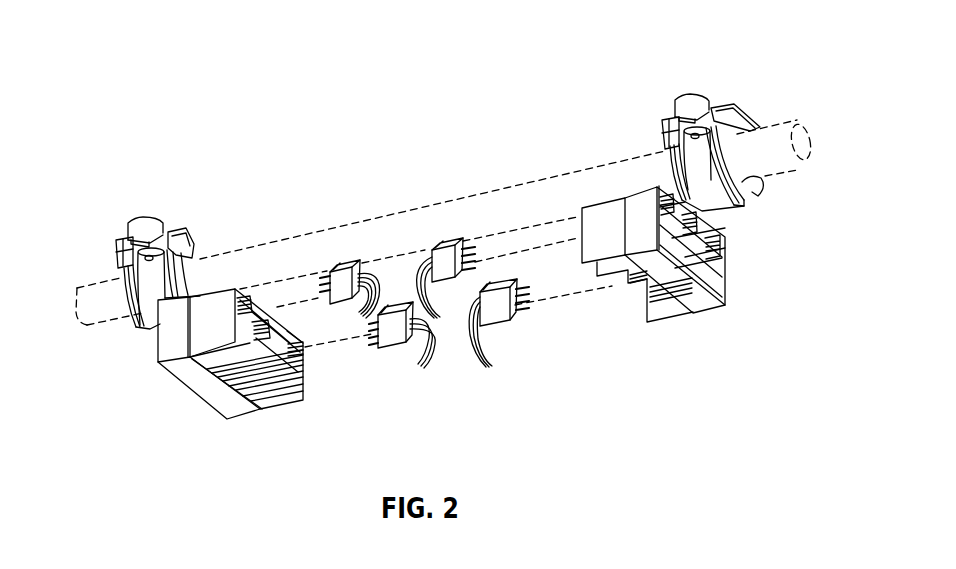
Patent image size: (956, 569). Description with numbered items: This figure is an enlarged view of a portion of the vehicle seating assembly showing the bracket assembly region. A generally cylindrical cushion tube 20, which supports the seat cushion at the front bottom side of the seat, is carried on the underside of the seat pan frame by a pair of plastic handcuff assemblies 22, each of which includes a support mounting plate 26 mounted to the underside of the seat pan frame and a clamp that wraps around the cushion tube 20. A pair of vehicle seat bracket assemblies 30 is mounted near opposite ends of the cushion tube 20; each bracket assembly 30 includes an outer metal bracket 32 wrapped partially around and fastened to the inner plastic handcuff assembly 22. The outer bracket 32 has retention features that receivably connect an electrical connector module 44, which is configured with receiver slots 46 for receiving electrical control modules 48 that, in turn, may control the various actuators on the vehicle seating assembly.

The cushion tube 20 is at (498, 190).
The handcuff assembly 22 is at (441, 184).
The support mounting plate 26 is at (142, 227).
The vehicle seat bracket assembly 30 is at (441, 249).
The outer bracket 32 is at (122, 297).
The electrical connector module 44 is at (453, 327).
The receiver slots 46 is at (300, 343).
The electrical control module 48 is at (443, 260).